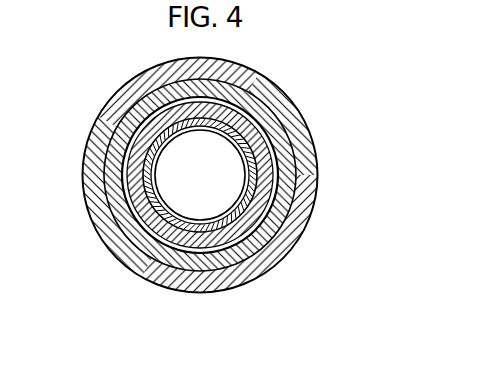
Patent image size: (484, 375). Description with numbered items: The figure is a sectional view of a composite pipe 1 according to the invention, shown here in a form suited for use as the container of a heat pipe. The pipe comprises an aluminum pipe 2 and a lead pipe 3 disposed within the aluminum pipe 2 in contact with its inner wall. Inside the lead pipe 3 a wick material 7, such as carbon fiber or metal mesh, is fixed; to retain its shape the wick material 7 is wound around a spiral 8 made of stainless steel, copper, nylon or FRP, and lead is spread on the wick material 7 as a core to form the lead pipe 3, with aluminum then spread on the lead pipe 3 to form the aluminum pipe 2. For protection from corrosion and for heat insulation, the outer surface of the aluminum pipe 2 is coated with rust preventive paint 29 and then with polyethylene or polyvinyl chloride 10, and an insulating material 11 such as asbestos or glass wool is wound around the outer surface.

The composite pipe 1 is at (310, 98).
The aluminum pipe 2 is at (205, 250).
The lead pipe 3 is at (168, 250).
The wick material 7 is at (133, 245).
The spiral 8 is at (158, 196).
The polyethylene or polyvinyl chloride 10 is at (253, 248).
The insulating material 11 is at (290, 231).
The rust preventive paint 29 is at (229, 250).